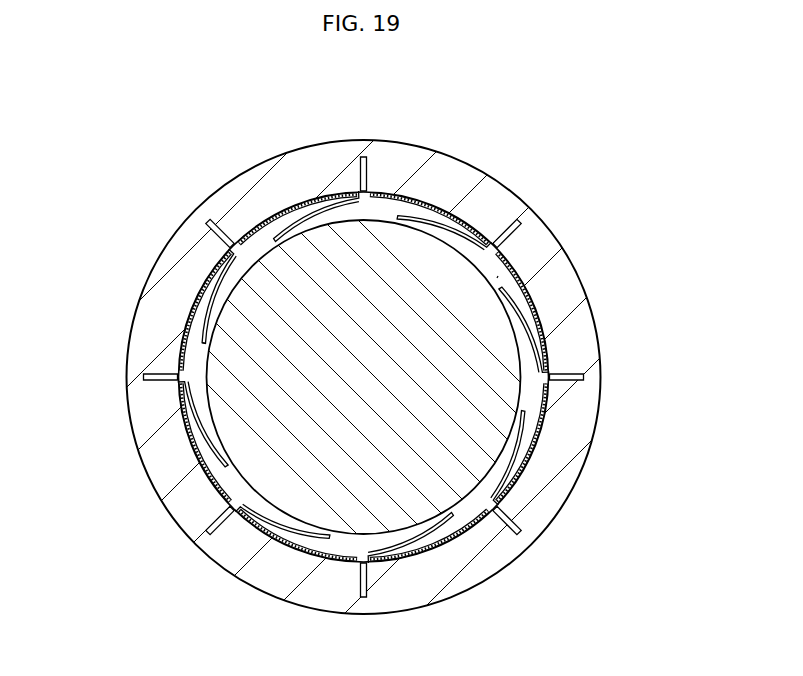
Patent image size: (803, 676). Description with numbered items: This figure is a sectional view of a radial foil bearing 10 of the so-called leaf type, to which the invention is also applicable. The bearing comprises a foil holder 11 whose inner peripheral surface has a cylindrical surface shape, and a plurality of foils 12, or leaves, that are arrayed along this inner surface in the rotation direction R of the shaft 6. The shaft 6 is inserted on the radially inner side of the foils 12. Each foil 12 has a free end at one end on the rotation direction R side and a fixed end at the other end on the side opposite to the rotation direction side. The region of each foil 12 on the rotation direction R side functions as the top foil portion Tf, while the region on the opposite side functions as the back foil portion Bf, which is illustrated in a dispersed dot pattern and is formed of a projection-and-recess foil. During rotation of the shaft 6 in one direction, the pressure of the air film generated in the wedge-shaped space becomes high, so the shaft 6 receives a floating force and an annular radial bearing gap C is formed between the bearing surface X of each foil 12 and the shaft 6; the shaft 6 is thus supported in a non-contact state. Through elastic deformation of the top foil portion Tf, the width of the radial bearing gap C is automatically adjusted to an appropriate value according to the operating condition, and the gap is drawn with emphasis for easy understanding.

The radial foil bearing 10 is at (401, 388).
The foil holder 11 is at (175, 262).
The shaft 6 is at (237, 433).
The foil 12 is at (320, 204).
The back foil portion Bf is at (449, 208).
The top foil portion Tf is at (440, 224).
The bearing surface X is at (215, 303).
The rotation direction R is at (433, 274).
The radial bearing gap C is at (497, 278).